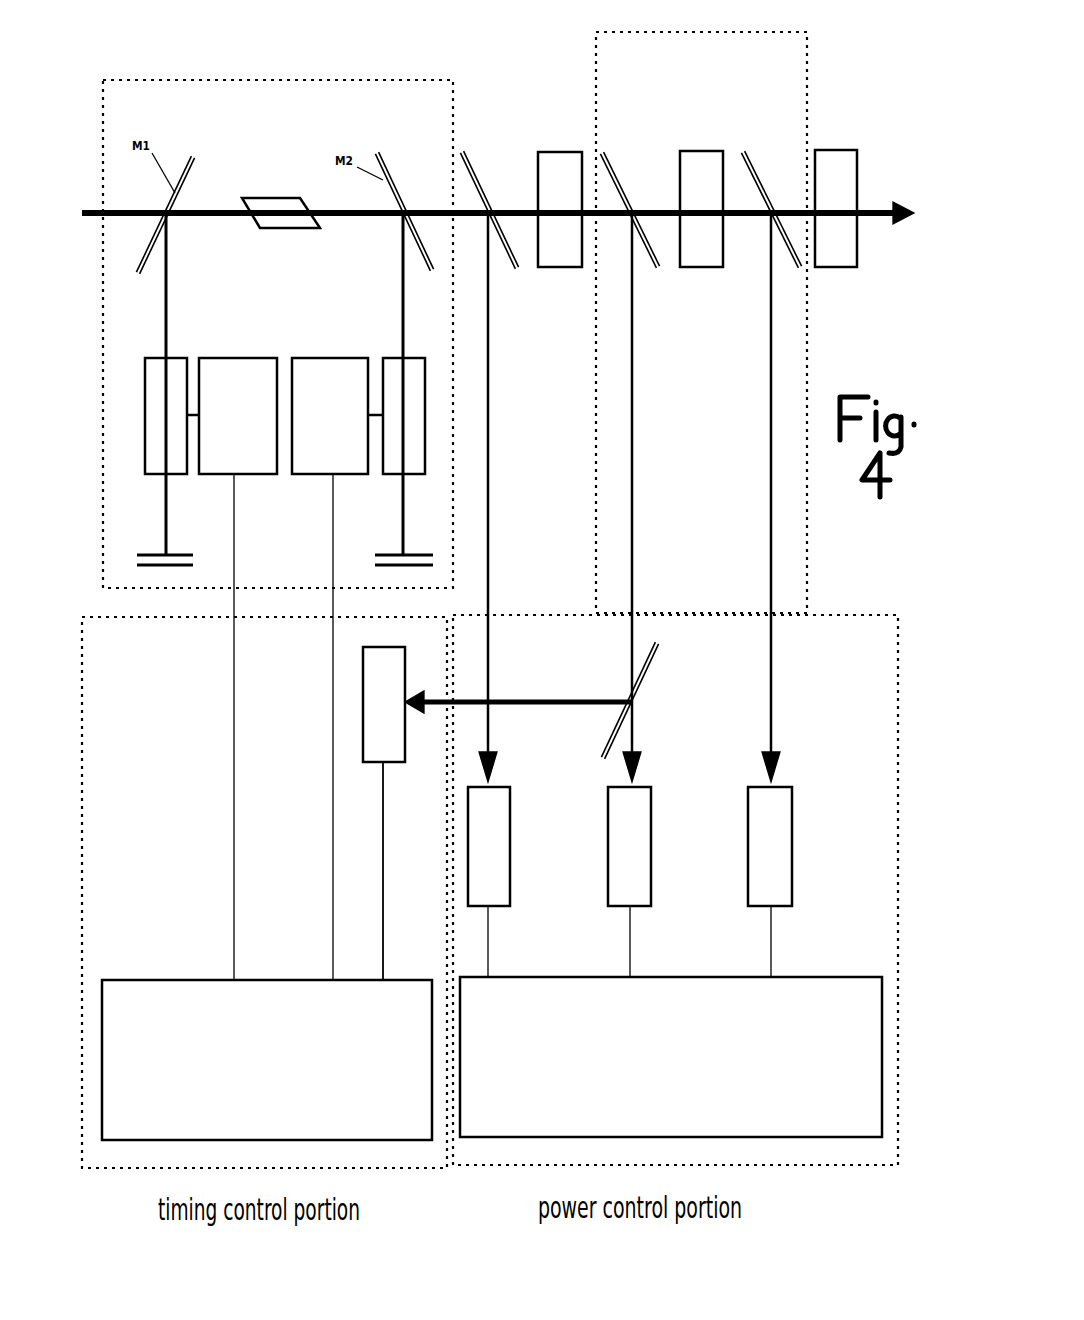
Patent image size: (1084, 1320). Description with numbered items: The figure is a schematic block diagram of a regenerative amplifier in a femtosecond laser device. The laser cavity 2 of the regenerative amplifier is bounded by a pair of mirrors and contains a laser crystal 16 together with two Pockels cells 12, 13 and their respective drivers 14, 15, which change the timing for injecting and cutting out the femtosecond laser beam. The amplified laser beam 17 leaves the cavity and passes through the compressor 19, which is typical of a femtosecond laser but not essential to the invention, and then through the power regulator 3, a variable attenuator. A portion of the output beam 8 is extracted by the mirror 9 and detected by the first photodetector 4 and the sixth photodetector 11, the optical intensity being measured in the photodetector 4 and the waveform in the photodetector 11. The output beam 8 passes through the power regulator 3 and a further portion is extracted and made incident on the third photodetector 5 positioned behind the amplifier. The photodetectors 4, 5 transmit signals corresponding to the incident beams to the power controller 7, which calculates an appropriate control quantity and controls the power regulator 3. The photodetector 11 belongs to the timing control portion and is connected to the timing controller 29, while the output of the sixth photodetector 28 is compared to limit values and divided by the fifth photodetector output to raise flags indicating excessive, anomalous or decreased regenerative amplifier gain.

The laser cavity 2 is at (457, 100).
The power regulator 3 is at (693, 150).
The first photodetector 4 is at (652, 867).
The third photodetector 5 is at (793, 867).
The power controller 7 is at (820, 973).
The output beam 8 is at (645, 200).
The mirror 9 is at (610, 167).
The sixth photodetector 11 is at (400, 763).
The Pockels cell 12 is at (170, 358).
The Pockels cell 13 is at (427, 440).
The Pockels cell driver 14 is at (213, 357).
The Pockels cell driver 15 is at (313, 355).
The laser crystal 16 is at (277, 197).
The amplified laser beam 17 is at (432, 208).
The compressor 19 is at (552, 150).
The sixth photodetector 28 is at (510, 855).
The timing controller 29 is at (123, 975).